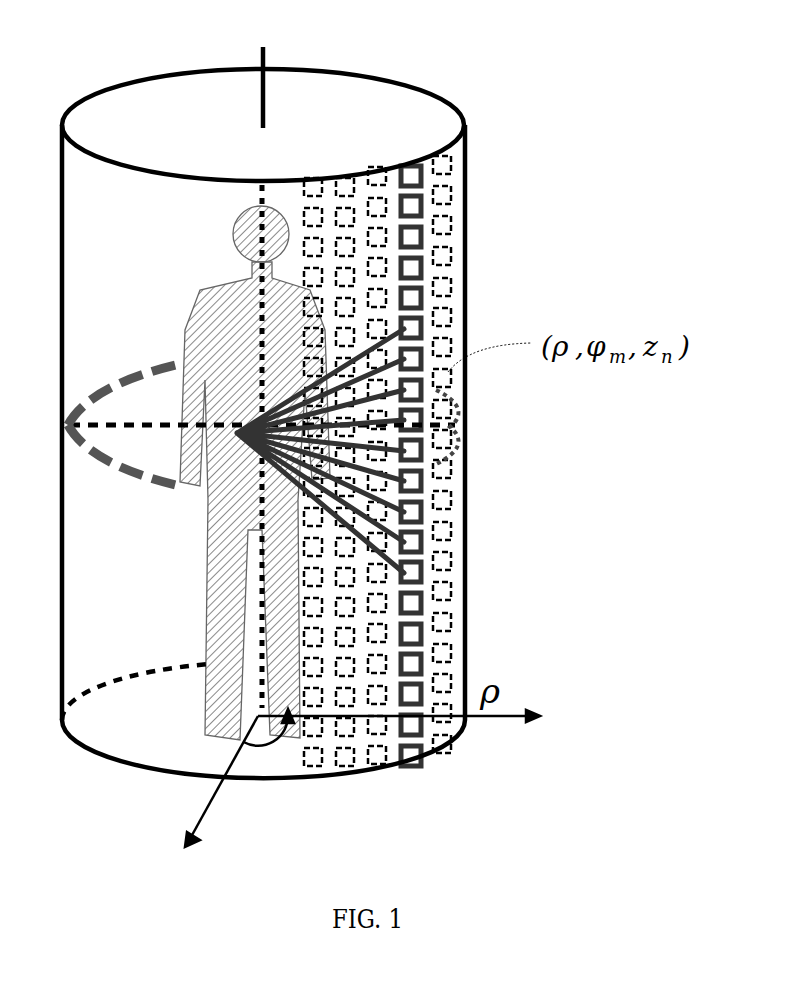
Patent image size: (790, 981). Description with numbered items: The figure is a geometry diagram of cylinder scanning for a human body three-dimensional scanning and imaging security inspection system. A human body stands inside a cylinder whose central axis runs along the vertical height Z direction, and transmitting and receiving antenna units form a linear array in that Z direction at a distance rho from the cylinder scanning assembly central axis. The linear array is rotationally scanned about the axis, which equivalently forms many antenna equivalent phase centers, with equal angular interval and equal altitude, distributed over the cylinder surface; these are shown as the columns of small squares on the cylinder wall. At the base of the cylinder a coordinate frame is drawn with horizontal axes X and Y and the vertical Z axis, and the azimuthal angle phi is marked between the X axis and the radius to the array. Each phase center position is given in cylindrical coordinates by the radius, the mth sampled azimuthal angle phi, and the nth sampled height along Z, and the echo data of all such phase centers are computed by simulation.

The X axis X is at (203, 792).
The Y axis Y is at (412, 716).
The vertical height Z direction Z is at (263, 69).
The azimuthal angle phi is at (269, 746).